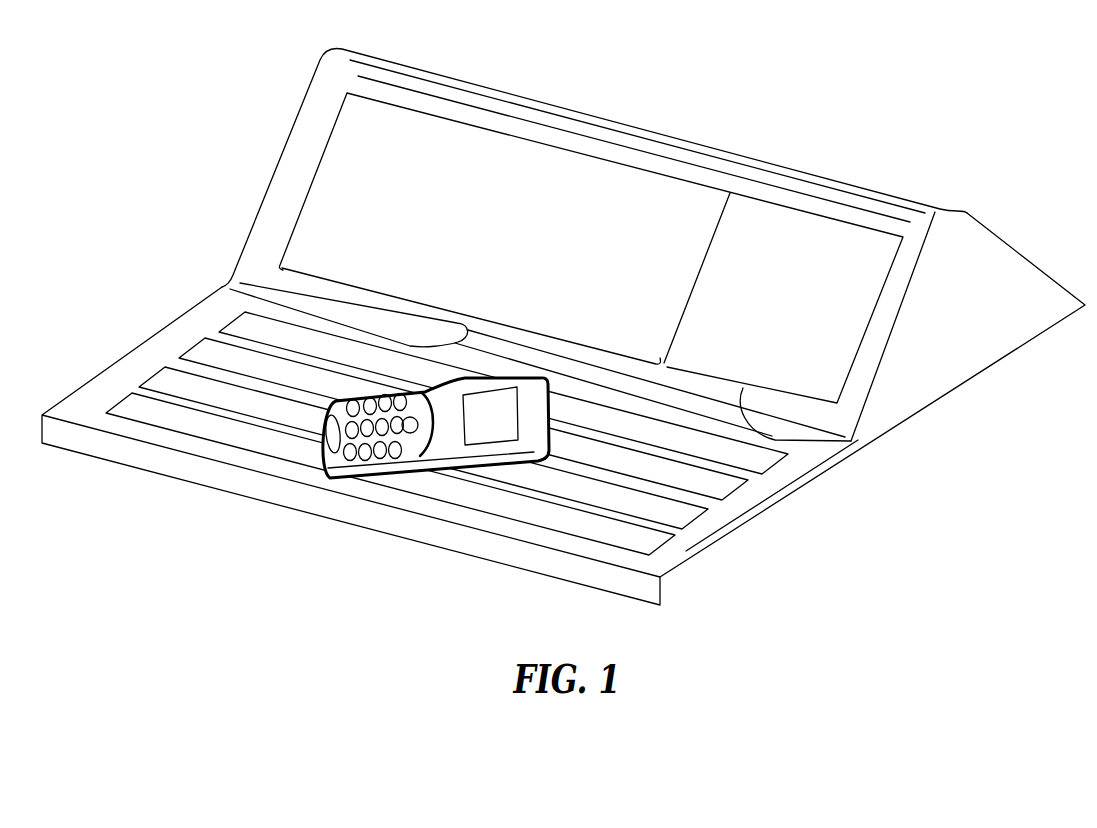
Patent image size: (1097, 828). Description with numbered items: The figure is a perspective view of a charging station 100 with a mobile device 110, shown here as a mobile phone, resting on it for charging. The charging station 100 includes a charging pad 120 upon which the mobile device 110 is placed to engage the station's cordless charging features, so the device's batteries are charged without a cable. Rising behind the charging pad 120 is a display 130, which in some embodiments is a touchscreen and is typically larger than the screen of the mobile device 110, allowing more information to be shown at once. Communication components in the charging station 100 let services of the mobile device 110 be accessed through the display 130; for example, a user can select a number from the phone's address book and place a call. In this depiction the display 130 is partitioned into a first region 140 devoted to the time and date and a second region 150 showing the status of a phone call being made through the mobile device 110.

The charging station 100 is at (563, 326).
The mobile device 110 is at (327, 478).
The charging pad 120 is at (727, 513).
The display 130 is at (619, 164).
The first region 140 is at (851, 441).
The second region 150 is at (222, 287).